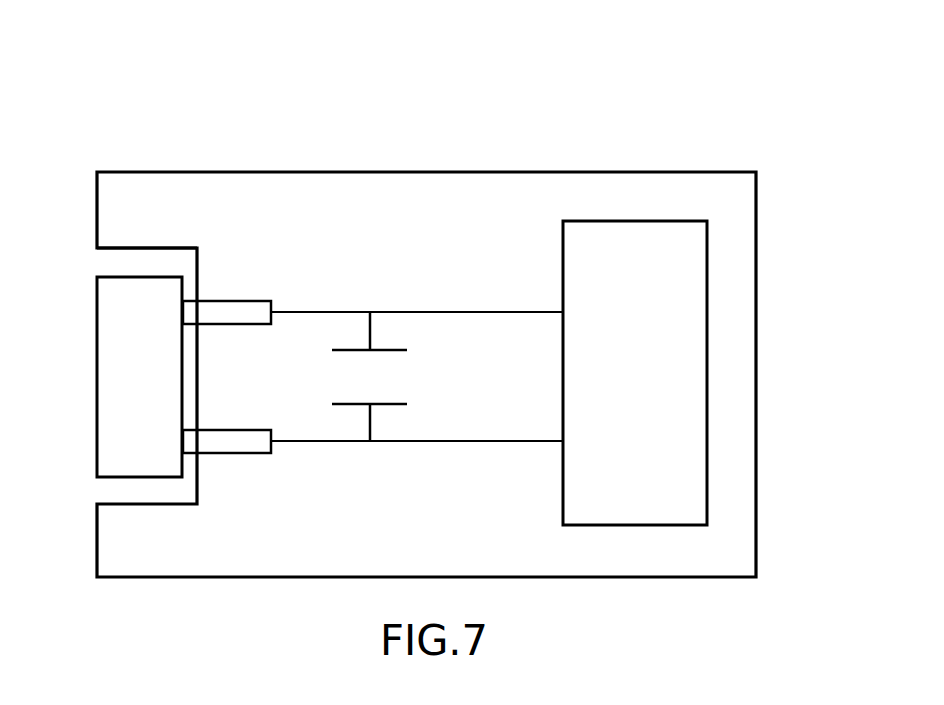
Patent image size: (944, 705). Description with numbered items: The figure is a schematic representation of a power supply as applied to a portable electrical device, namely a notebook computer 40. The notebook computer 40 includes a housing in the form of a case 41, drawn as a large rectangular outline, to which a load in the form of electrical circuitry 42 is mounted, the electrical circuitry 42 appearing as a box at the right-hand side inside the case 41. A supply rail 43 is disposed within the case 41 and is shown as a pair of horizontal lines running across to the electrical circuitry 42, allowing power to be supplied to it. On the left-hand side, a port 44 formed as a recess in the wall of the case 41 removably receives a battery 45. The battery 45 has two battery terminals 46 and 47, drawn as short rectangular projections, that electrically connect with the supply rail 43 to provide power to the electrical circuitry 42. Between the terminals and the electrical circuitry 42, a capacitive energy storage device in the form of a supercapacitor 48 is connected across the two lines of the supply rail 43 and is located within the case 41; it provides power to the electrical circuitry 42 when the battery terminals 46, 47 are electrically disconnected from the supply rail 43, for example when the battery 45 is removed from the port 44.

The notebook computer 40 is at (400, 100).
The case 41 is at (740, 305).
The electrical circuitry 42 is at (680, 471).
The supply rail 43 is at (433, 312).
The port 44 is at (148, 248).
The battery 45 is at (125, 375).
The battery terminal 46 is at (227, 313).
The battery terminal 47 is at (242, 442).
The supercapacitor 48 is at (380, 376).